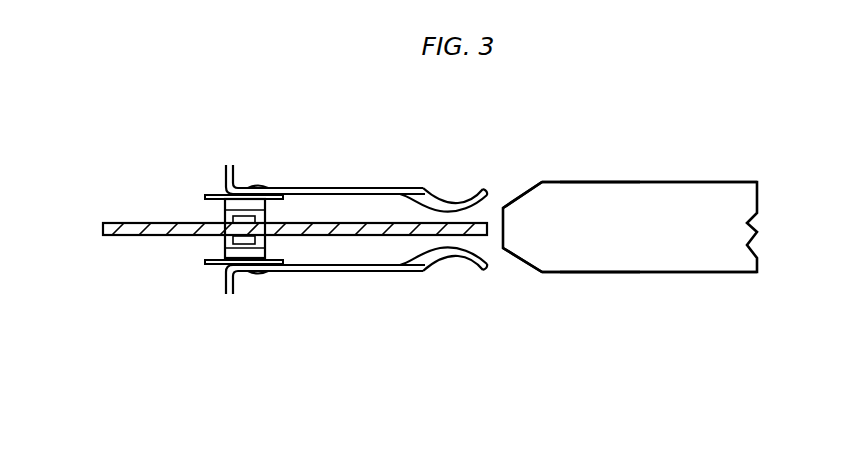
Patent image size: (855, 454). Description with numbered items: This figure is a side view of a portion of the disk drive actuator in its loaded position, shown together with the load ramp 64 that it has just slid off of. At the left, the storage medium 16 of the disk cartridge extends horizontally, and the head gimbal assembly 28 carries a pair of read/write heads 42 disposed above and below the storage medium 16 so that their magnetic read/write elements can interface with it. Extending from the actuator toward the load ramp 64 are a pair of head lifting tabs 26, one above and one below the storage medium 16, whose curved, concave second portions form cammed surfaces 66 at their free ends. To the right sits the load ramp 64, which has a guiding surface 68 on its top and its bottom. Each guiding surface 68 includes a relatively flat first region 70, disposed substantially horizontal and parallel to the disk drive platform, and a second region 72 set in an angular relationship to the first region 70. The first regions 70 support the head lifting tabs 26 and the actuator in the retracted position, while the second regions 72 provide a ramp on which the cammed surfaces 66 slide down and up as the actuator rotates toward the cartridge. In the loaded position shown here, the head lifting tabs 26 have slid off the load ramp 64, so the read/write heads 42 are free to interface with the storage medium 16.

The storage medium 16 is at (108, 228).
The head lifting tab 26 is at (373, 188).
The head gimbal assembly 28 is at (199, 205).
The read/write head 42 is at (225, 218).
The load ramp 64 is at (710, 202).
The cammed surface 66 is at (400, 193).
The guiding surface 68 is at (570, 165).
The first region 70 is at (653, 183).
The second region 72 is at (523, 192).